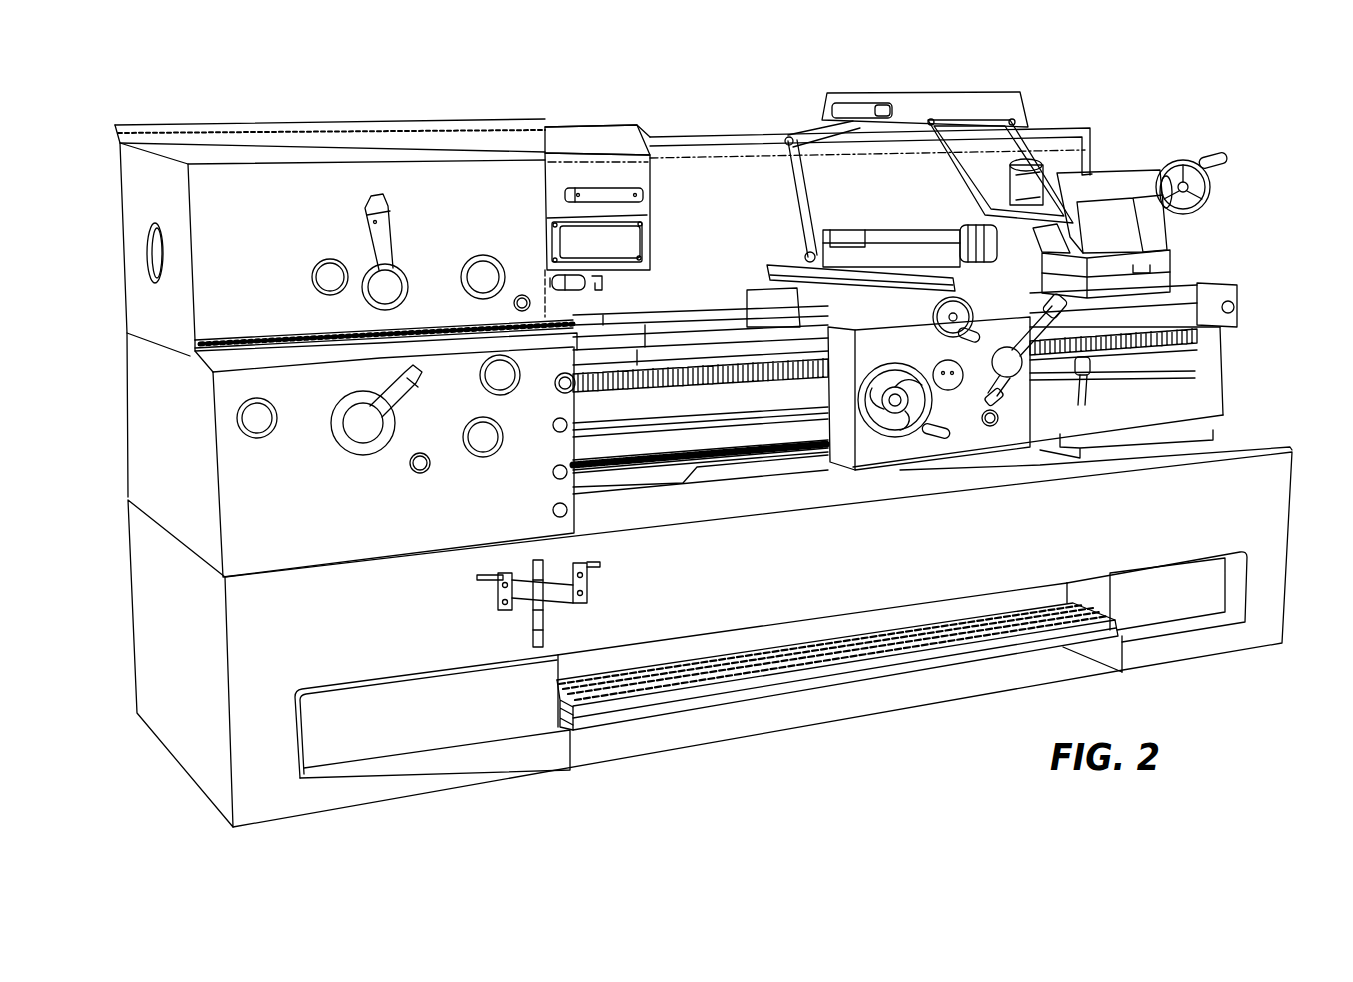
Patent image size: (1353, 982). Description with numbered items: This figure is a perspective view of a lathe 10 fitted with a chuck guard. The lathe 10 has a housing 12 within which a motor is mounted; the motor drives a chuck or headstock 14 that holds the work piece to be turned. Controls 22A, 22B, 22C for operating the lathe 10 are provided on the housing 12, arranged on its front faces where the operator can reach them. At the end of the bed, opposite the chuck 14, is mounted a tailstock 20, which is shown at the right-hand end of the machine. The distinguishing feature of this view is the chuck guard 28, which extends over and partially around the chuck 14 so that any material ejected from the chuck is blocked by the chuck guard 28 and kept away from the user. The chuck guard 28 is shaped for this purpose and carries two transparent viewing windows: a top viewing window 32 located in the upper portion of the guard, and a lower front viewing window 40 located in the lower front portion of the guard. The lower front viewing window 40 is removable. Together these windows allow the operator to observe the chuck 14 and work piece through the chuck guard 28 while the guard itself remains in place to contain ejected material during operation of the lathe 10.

The lathe 10 is at (753, 116).
The housing 12 is at (180, 713).
The chuck 14 is at (596, 282).
The tailstock 20 is at (1122, 183).
The control 22A is at (365, 225).
The control 22B is at (418, 382).
The control 22C is at (523, 277).
The chuck guard 28 is at (588, 126).
The top viewing window 32 is at (613, 141).
The lower front viewing window 40 is at (627, 237).